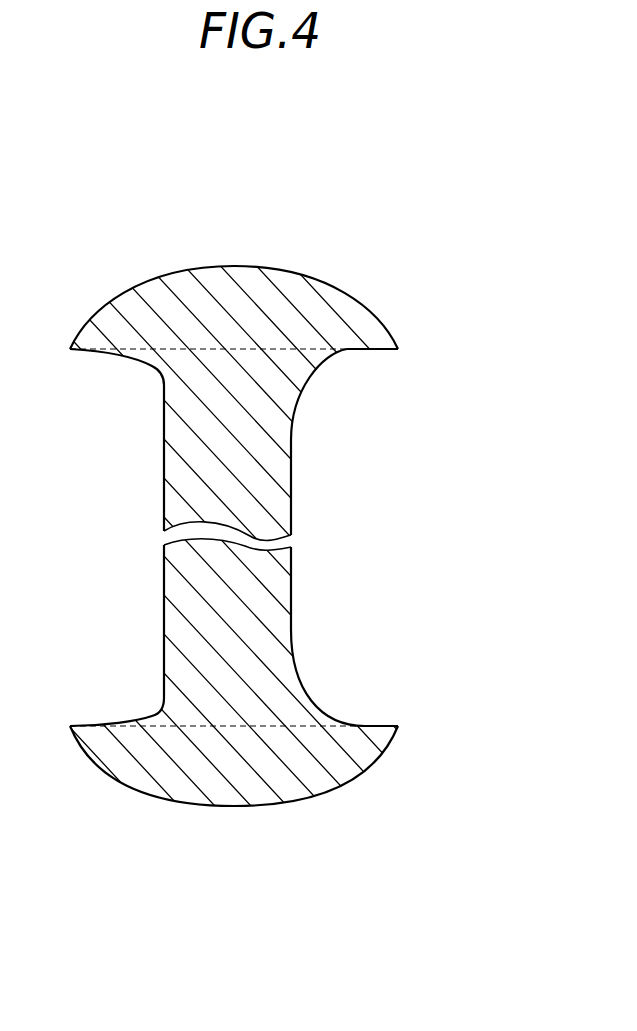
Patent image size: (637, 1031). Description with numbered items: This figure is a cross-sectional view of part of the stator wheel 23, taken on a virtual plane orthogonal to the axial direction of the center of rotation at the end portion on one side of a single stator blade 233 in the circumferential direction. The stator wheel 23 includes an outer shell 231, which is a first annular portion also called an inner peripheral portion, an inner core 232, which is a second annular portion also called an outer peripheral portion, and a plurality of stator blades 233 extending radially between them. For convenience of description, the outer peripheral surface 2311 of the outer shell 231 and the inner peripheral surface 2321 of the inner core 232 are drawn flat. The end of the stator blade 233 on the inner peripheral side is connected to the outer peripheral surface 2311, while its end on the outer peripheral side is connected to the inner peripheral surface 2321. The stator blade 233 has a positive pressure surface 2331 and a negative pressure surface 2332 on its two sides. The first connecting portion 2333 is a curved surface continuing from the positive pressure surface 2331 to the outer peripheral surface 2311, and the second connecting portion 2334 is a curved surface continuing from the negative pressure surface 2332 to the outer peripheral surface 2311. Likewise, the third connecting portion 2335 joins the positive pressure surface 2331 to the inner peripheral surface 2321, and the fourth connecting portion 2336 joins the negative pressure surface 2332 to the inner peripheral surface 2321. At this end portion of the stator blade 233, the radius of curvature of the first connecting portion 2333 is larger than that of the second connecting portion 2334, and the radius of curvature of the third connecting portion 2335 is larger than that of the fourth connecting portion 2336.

The stator wheel 23 is at (318, 515).
The outer shell 231 is at (281, 749).
The outer peripheral surface 2311 is at (383, 724).
The inner core 232 is at (291, 331).
The inner peripheral surface 2321 is at (392, 353).
The stator blade 233 is at (230, 541).
The positive pressure surface 2331 is at (292, 440).
The negative pressure surface 2332 is at (164, 457).
The first connecting portion 2333 is at (326, 712).
The second connecting portion 2334 is at (157, 709).
The third connecting portion 2335 is at (325, 367).
The fourth connecting portion 2336 is at (153, 366).